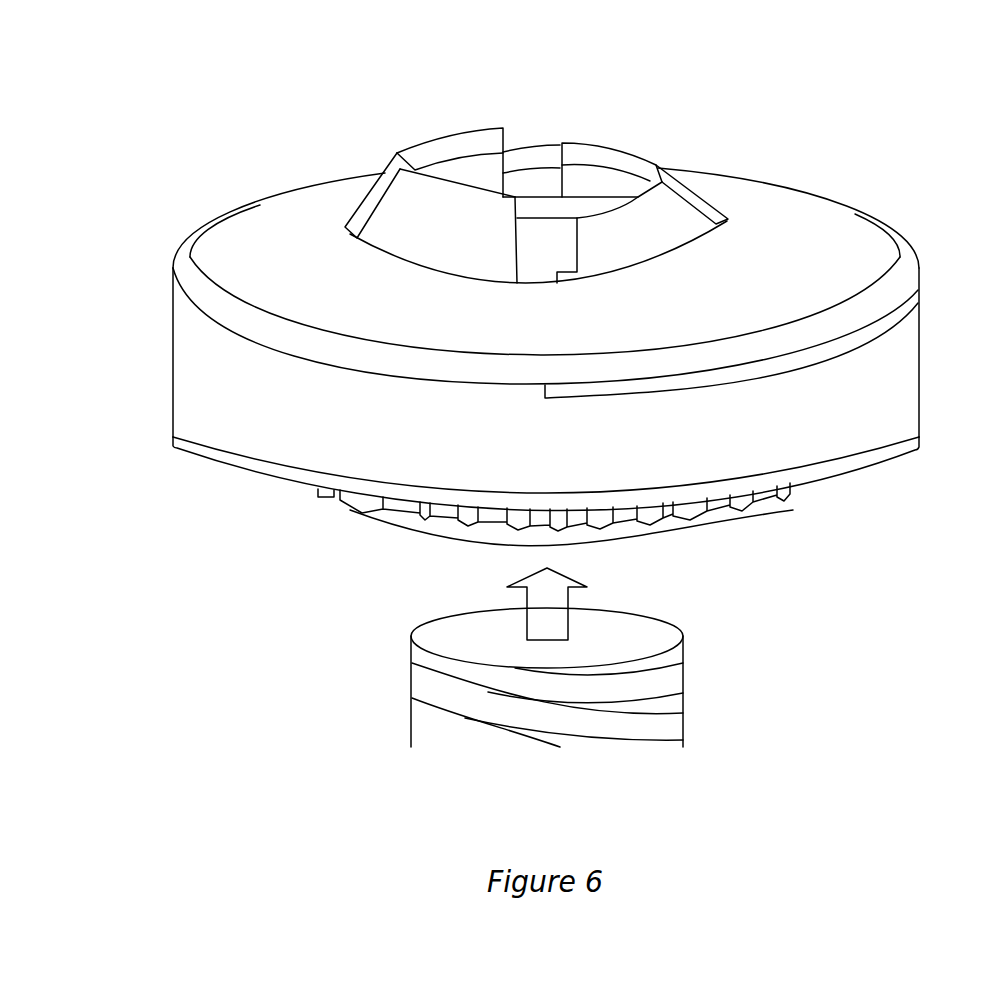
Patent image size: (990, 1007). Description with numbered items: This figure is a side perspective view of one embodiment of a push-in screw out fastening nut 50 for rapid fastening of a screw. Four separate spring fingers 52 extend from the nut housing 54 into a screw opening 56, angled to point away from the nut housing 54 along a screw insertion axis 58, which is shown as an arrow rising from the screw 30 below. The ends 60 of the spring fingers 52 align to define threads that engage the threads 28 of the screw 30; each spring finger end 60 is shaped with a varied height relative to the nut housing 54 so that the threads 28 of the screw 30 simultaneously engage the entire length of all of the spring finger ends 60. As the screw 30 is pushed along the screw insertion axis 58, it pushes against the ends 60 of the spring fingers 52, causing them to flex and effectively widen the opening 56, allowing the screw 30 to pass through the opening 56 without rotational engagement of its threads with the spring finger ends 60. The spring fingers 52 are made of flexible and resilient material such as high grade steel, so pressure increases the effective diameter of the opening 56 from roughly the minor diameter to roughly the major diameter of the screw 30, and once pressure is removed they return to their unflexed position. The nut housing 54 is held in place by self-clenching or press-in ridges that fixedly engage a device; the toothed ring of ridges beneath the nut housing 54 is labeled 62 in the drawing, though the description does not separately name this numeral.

The threads 28 is at (687, 692).
The screw 30 is at (700, 648).
The push-in screw out fastening nut 50 is at (241, 181).
The spring fingers 52 is at (556, 148).
The nut housing 54 is at (187, 385).
The screw opening 56 is at (530, 263).
The screw insertion axis 58 is at (534, 621).
The spring finger ends 60 is at (425, 147).
The ratchet teeth 62 is at (414, 529).